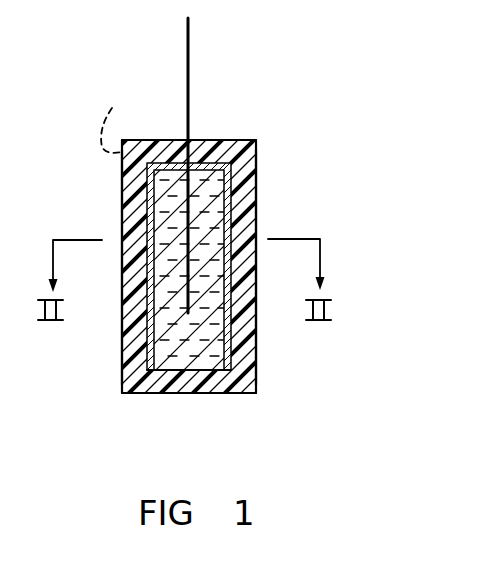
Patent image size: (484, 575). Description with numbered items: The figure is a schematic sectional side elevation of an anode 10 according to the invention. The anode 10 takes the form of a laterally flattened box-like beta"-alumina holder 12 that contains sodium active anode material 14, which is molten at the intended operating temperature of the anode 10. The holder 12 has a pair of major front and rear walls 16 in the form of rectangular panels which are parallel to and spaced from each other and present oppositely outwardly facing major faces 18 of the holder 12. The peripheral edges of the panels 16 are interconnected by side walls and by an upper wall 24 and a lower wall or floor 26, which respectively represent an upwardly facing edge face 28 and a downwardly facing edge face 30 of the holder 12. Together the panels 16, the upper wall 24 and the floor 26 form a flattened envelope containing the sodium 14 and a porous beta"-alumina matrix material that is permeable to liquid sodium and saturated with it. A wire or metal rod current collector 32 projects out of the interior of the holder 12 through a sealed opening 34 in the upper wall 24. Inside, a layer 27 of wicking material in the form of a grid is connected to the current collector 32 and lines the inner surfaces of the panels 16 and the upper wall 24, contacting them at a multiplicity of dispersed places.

The anode 10 is at (347, 62).
The holder 12 is at (283, 148).
The sodium active anode material 14 is at (248, 382).
The major front/rear walls 16 is at (135, 212).
The major faces 18 is at (117, 316).
The upper wall 24 is at (226, 163).
The lower wall or floor 26 is at (178, 383).
The layer of wicking material 27 is at (206, 180).
The upwardly facing edge face 28 is at (158, 152).
The downwardly facing edge face 30 is at (196, 400).
The current collector 32 is at (188, 65).
The sealed opening 34 is at (105, 116).